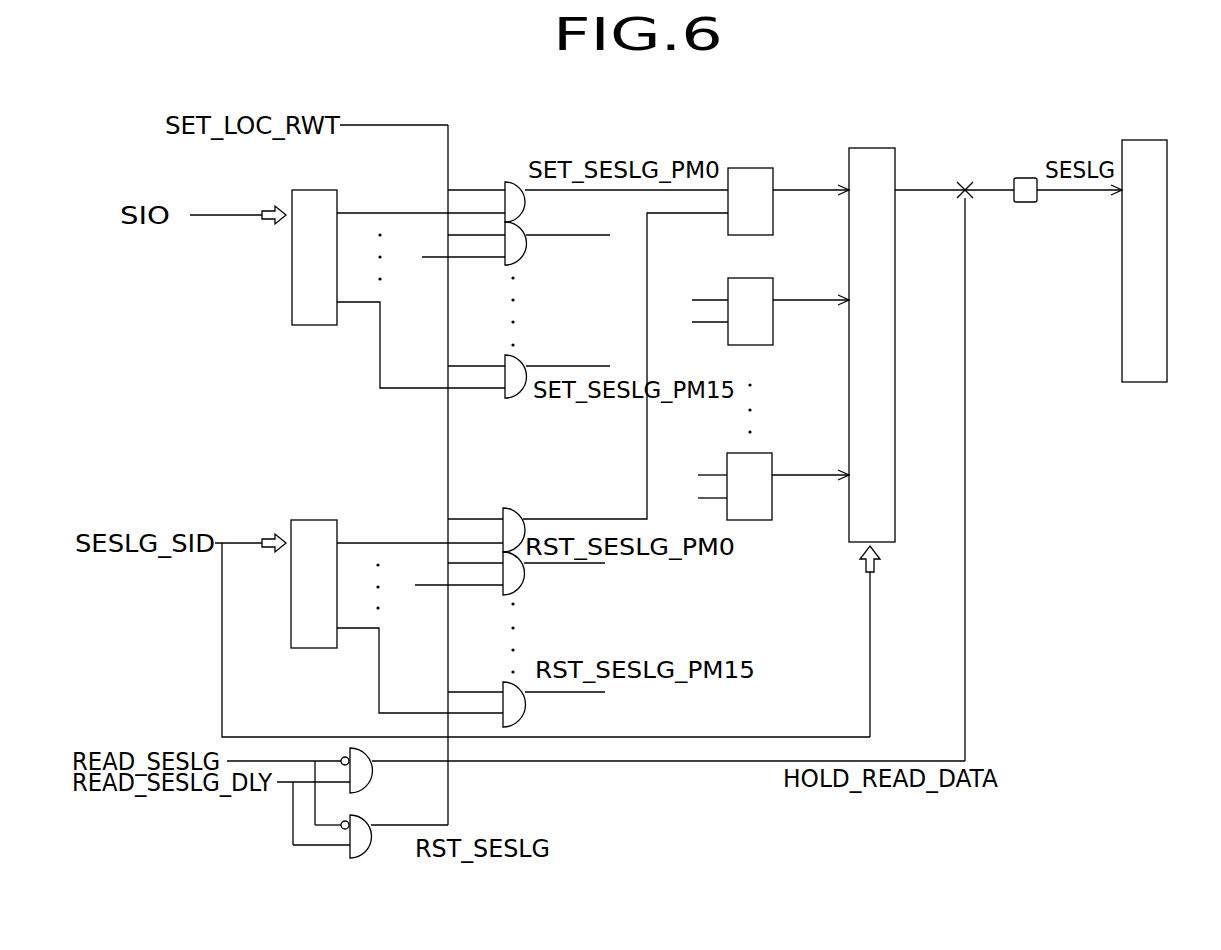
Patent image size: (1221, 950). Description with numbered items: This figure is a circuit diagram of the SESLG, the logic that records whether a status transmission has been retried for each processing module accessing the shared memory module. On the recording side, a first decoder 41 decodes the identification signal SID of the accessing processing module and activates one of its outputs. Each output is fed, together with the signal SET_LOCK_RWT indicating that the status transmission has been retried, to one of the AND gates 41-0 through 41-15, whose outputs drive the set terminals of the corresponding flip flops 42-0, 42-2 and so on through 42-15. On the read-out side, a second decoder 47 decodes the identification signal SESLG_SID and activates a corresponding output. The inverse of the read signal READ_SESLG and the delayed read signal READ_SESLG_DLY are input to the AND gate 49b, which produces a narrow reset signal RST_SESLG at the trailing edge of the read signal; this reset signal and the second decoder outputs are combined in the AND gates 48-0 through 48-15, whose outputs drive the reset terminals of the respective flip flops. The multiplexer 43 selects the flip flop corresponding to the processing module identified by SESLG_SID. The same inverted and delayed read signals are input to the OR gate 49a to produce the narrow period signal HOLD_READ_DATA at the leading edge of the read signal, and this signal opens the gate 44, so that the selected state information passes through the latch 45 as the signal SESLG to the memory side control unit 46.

The first decoder 41 is at (318, 325).
The AND gate 41-0 is at (512, 182).
The AND gate 41-15 is at (510, 398).
The flip flop 42-0 is at (742, 168).
The flip flop 42-2 is at (752, 278).
The flip flop 42-15 is at (750, 453).
The multiplexer 43 is at (875, 148).
The gate 44 is at (960, 178).
The latch 45 is at (1022, 178).
The memory side control unit 46 is at (1167, 148).
The second decoder 47 is at (318, 520).
The AND gate 48-0 is at (512, 508).
The AND gate 48-15 is at (524, 712).
The OR gate 49a is at (370, 778).
The AND gate 49b is at (370, 845).